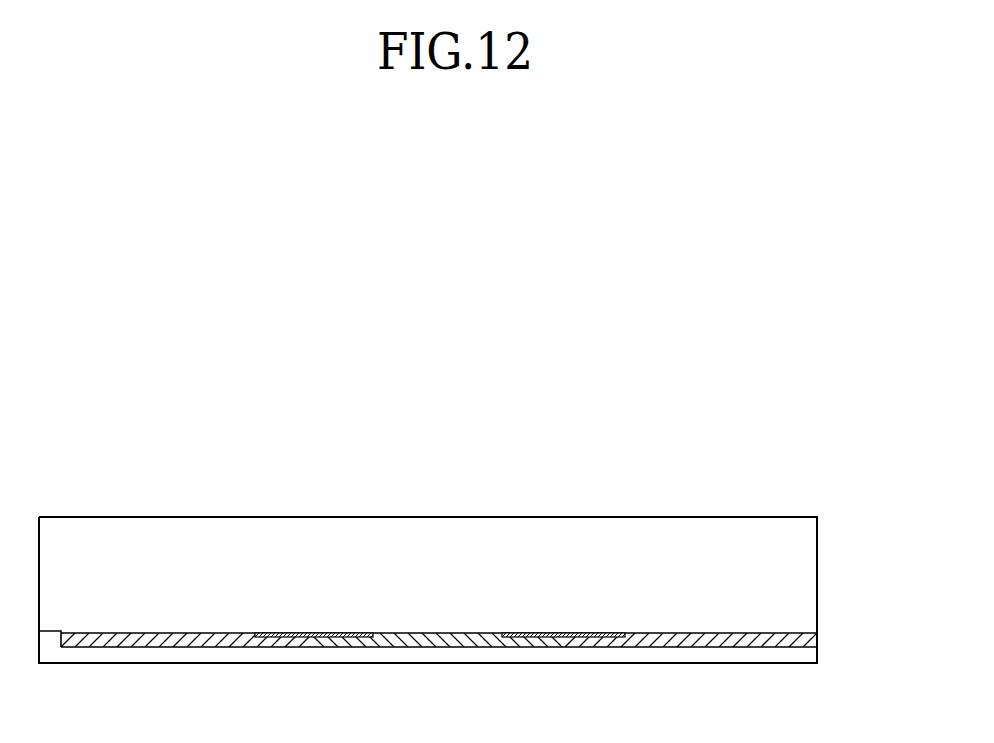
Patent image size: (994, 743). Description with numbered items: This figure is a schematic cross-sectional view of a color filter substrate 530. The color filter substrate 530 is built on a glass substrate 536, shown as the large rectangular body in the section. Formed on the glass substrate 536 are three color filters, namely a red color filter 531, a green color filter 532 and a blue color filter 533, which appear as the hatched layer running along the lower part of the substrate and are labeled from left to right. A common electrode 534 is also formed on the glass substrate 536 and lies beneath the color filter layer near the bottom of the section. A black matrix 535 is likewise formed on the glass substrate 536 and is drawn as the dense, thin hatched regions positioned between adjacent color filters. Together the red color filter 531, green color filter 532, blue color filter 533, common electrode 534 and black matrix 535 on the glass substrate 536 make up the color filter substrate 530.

The color filter substrate 530 is at (828, 481).
The red color filter 531 is at (163, 646).
The green color filter 532 is at (452, 644).
The blue color filter 533 is at (712, 644).
The common electrode 534 is at (803, 657).
The black matrix 535 is at (584, 632).
The glass substrate 536 is at (811, 577).